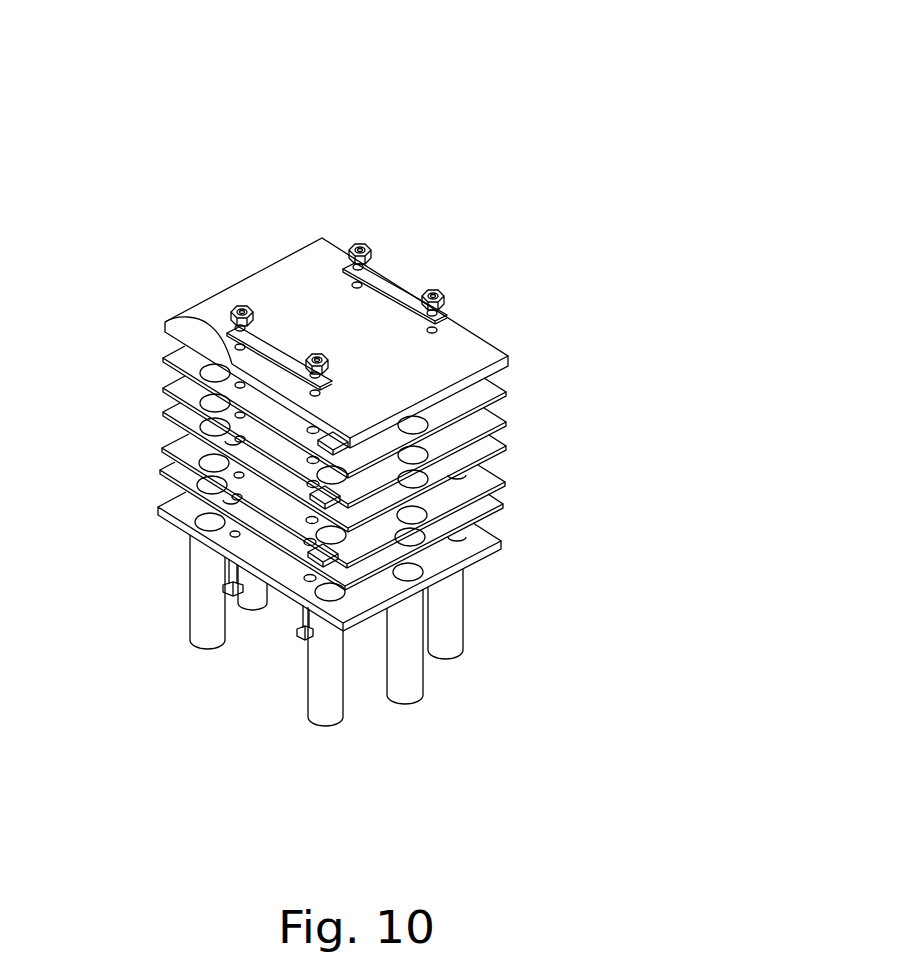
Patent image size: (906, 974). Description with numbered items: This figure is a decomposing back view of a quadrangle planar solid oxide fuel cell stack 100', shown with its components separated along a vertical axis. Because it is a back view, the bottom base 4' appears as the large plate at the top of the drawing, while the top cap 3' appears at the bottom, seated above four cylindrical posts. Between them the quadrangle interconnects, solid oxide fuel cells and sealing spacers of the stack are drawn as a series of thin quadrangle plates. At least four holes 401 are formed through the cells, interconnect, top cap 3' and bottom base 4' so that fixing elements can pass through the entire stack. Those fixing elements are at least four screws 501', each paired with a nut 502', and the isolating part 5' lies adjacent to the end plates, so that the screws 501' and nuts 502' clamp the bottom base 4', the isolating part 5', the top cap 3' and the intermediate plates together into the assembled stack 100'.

The quadrangle planar solid oxide fuel cell stack 100' is at (376, 392).
The bottom base 4' is at (287, 266).
The holes 401 is at (173, 317).
The nut 502' is at (337, 231).
The isolating part 5' is at (375, 239).
The top cap 3' is at (391, 609).
The screws 501' is at (239, 671).